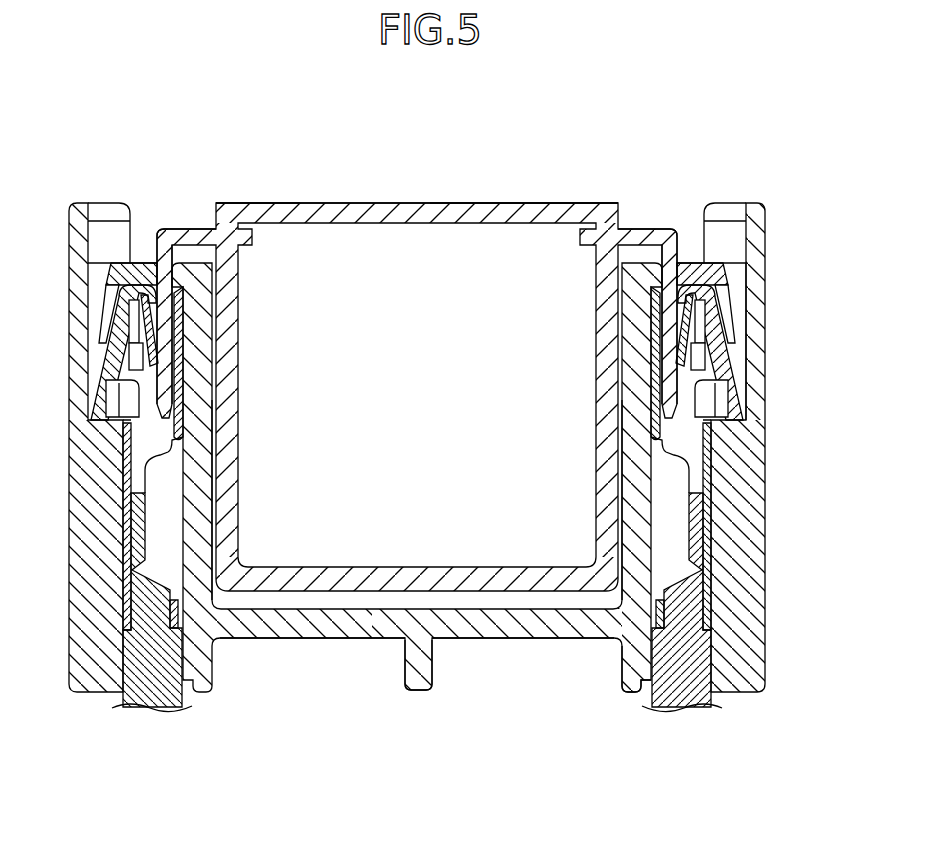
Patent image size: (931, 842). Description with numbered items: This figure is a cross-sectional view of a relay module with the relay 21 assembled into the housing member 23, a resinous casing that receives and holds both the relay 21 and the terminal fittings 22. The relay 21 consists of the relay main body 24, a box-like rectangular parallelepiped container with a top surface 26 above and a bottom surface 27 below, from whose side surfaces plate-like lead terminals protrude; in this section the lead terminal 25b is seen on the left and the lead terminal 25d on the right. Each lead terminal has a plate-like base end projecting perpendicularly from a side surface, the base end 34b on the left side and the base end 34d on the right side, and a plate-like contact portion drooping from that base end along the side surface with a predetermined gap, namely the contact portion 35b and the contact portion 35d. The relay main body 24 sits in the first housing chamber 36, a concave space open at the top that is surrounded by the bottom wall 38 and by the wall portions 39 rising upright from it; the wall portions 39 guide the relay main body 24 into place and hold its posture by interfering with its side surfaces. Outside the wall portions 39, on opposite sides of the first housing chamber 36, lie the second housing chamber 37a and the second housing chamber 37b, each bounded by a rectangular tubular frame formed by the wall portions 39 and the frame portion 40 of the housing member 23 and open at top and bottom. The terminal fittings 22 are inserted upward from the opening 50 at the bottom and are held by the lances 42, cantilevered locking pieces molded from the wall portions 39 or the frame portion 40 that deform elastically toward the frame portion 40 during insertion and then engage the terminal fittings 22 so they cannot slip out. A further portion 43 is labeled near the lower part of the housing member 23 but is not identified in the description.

The relay 21 is at (339, 192).
The terminal fitting 22 is at (123, 300).
The housing member 23 is at (776, 497).
The relay main body 24 is at (460, 203).
The lead terminal 25b is at (173, 256).
The lead terminal 25d is at (691, 265).
The top surface 26 is at (290, 203).
The bottom surface 27 is at (478, 590).
The base end 34b is at (195, 229).
The base end 34d is at (643, 229).
The contact portion 35b is at (140, 263).
The contact portion 35d is at (697, 263).
The first housing chamber 36 is at (519, 189).
The second housing chamber 37a is at (107, 194).
The second housing chamber 37b is at (739, 192).
The bottom wall 38 is at (367, 600).
The wall portions 39 is at (212, 513).
The frame portion 40 is at (765, 291).
The lance 42 is at (139, 385).
The foot portion 43 is at (648, 657).
The opening 50 is at (722, 694).